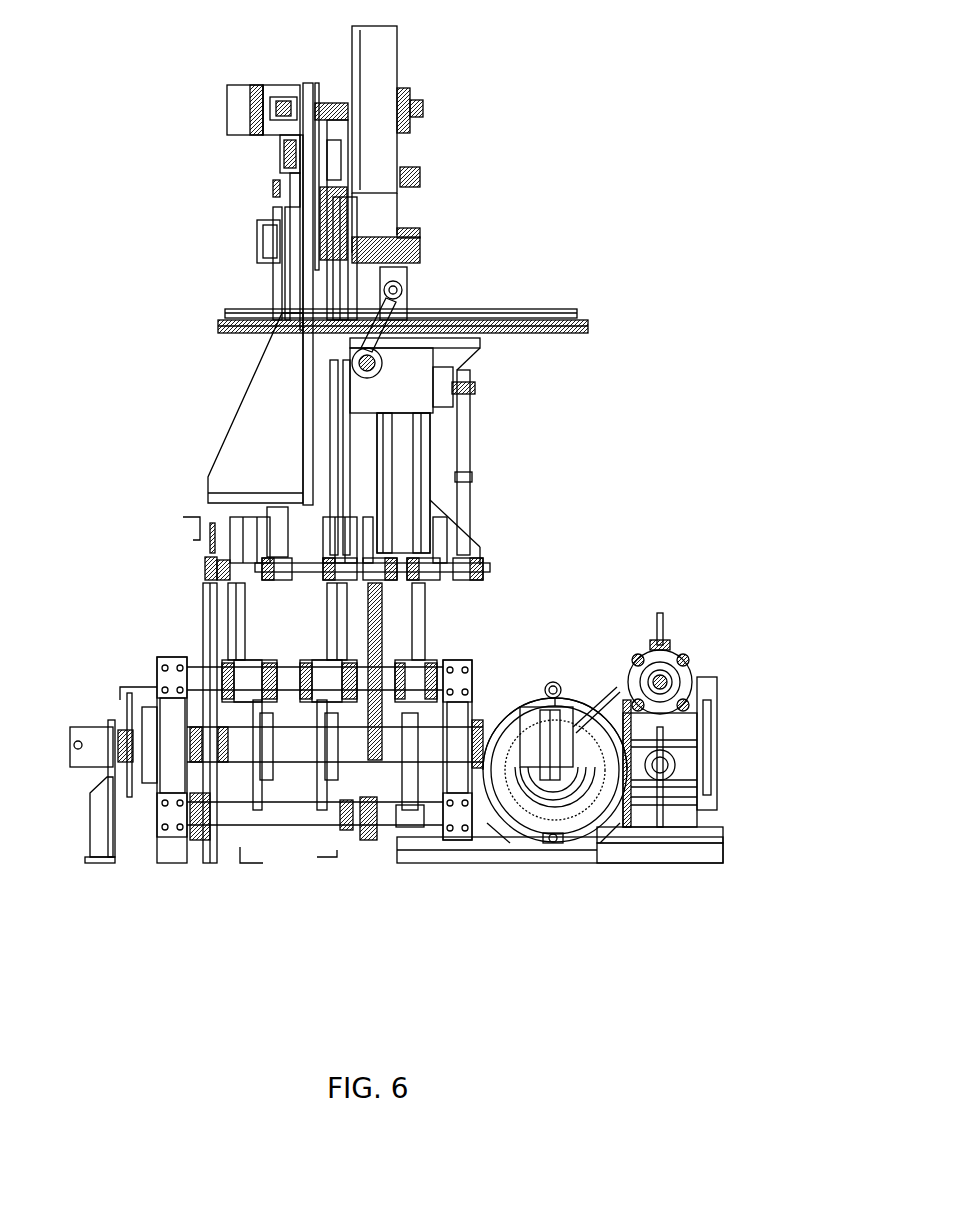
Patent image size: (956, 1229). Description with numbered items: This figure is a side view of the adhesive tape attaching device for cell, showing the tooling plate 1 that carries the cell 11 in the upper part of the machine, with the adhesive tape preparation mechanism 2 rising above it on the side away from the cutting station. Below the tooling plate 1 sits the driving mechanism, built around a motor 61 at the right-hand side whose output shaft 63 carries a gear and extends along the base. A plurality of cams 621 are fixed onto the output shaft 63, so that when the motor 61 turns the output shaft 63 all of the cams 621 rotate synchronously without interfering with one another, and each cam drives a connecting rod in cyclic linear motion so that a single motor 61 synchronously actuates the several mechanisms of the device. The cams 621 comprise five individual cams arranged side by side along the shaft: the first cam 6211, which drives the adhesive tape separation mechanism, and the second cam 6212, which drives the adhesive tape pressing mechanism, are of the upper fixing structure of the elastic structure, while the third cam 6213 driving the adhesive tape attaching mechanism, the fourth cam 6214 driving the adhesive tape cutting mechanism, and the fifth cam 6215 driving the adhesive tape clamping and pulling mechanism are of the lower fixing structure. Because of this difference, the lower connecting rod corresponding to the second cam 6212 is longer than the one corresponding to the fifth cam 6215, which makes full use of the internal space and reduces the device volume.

The tooling plate 1 is at (520, 336).
The cell 11 is at (524, 305).
The adhesive tape preparation mechanism 2 is at (382, 128).
The motor 61 is at (692, 722).
The output shaft 63 is at (512, 710).
The cams 621 is at (396, 802).
The first cam 6211 is at (407, 845).
The second cam 6212 is at (211, 775).
The third cam 6213 is at (327, 777).
The fourth cam 6214 is at (492, 795).
The fifth cam 6215 is at (253, 775).